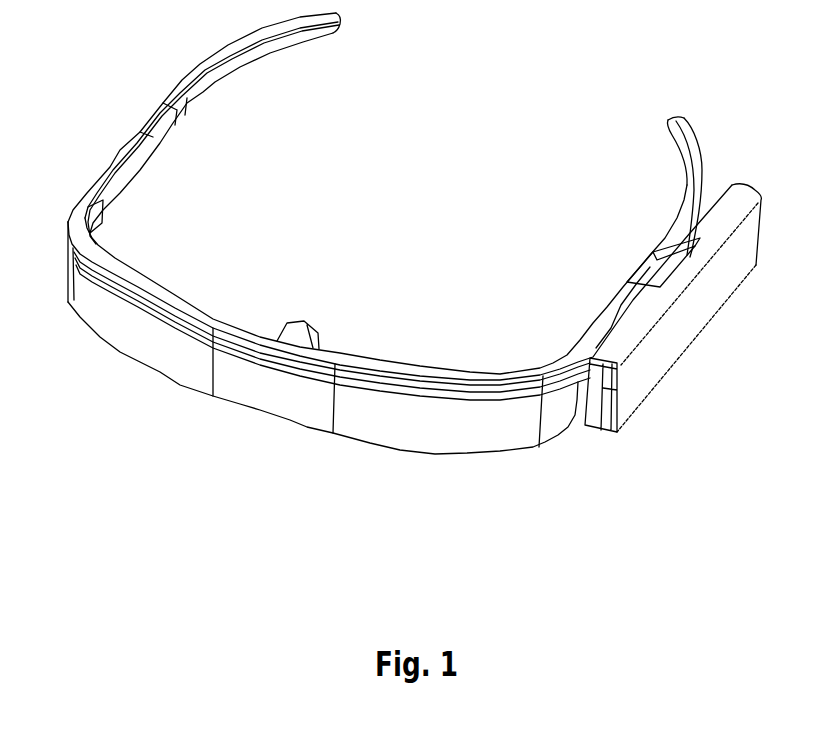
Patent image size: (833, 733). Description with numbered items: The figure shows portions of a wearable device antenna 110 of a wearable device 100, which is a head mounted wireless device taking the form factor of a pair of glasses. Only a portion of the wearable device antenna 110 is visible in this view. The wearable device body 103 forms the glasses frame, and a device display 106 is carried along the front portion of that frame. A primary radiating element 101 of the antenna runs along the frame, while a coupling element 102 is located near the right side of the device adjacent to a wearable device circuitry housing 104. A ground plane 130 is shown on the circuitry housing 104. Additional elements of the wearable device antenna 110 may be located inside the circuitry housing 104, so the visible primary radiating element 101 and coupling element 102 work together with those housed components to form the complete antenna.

The wearable device 100 is at (504, 51).
The primary radiating element 101 is at (98, 187).
The coupling element 102 is at (700, 247).
The wearable device body 103 is at (205, 89).
The wearable device circuitry housing 104 is at (747, 195).
The device display 106 is at (435, 430).
The wearable device antenna 110 is at (533, 330).
The ground plane 130 is at (683, 323).